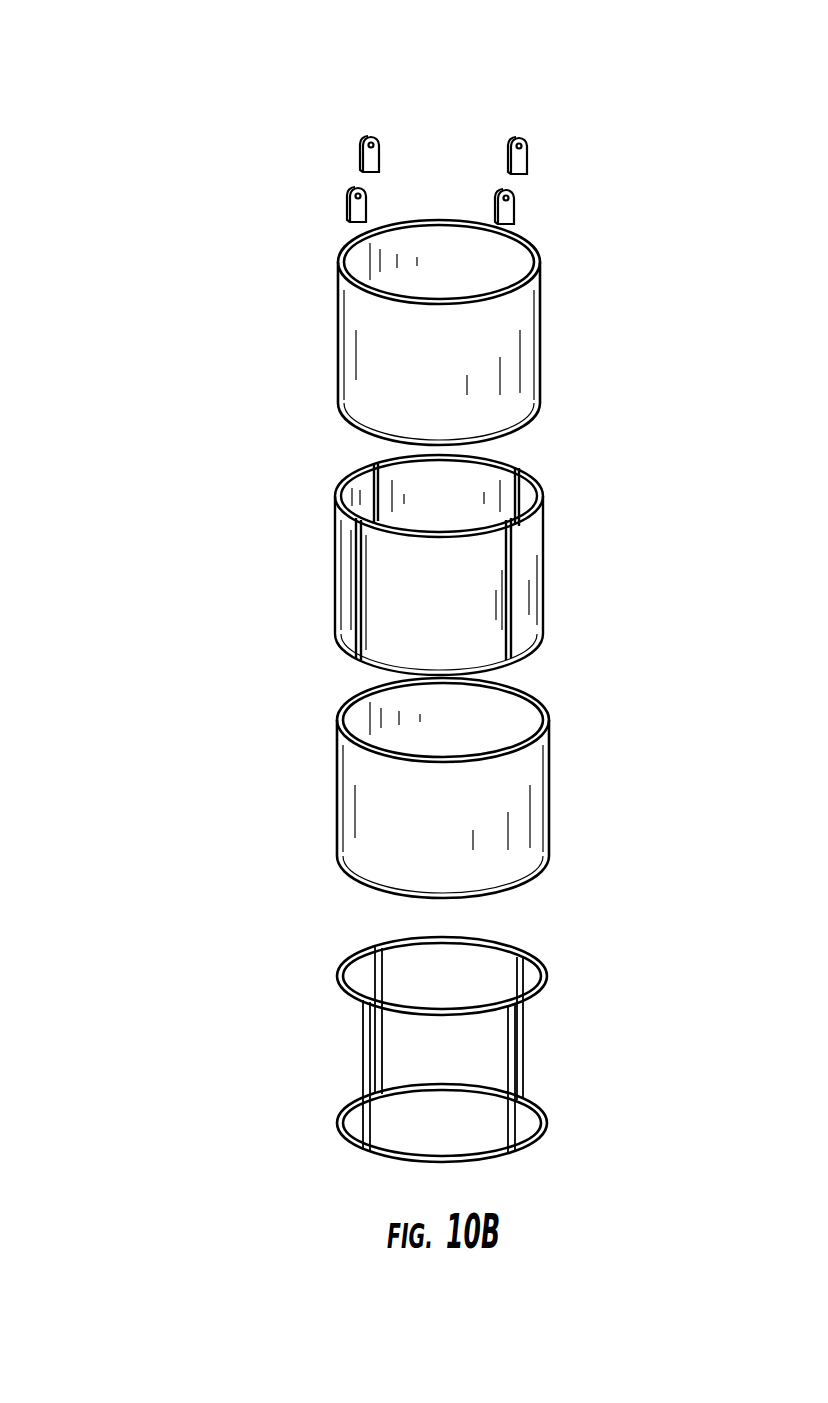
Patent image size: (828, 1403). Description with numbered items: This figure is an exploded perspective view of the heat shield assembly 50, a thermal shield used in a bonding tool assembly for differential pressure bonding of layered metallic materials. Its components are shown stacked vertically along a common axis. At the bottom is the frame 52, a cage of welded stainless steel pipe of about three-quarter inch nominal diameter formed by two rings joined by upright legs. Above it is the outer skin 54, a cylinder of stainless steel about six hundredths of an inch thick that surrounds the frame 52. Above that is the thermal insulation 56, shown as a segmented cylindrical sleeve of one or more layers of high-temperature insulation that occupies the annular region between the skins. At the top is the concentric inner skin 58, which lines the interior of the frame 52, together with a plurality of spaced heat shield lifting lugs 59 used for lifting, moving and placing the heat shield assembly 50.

The heat shield assembly 50 is at (222, 93).
The frame 52 is at (547, 972).
The outer skin 54 is at (347, 803).
The thermal insulation 56 is at (540, 565).
The inner skin 58 is at (338, 323).
The heat shield lifting lugs 59 is at (528, 158).